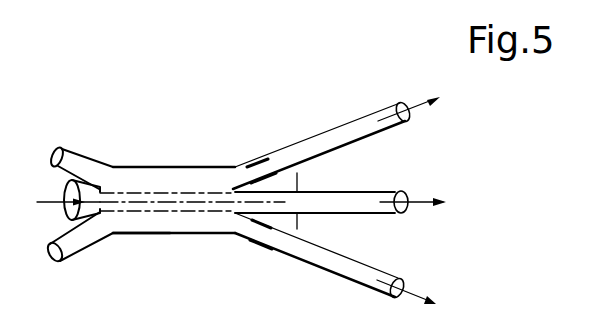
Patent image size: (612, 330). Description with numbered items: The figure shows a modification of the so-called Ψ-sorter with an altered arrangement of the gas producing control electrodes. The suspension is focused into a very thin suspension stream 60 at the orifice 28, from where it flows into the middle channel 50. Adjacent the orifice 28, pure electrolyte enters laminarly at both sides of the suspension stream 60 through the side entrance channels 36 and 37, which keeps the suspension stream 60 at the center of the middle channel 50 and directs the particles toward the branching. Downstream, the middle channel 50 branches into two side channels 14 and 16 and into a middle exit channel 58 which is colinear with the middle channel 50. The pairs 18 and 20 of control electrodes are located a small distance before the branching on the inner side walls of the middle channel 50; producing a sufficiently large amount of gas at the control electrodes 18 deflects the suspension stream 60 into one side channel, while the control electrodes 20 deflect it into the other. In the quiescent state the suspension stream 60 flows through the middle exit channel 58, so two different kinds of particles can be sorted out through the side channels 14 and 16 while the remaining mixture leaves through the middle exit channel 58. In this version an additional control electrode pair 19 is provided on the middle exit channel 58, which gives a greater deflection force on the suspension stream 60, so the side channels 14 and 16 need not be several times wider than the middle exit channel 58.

The side channel 14 is at (312, 146).
The side channel 16 is at (352, 268).
The pair of control electrodes 18 is at (248, 247).
The control electrode pair of the middle exit channel 19 is at (298, 179).
The pair of control electrodes 20 is at (252, 158).
The orifice 28 is at (99, 188).
The side entrance channel 36 is at (97, 247).
The side entrance channel 37 is at (114, 167).
The middle channel 50 is at (128, 222).
The middle exit channel 58 is at (350, 194).
The suspension stream 60 is at (178, 198).